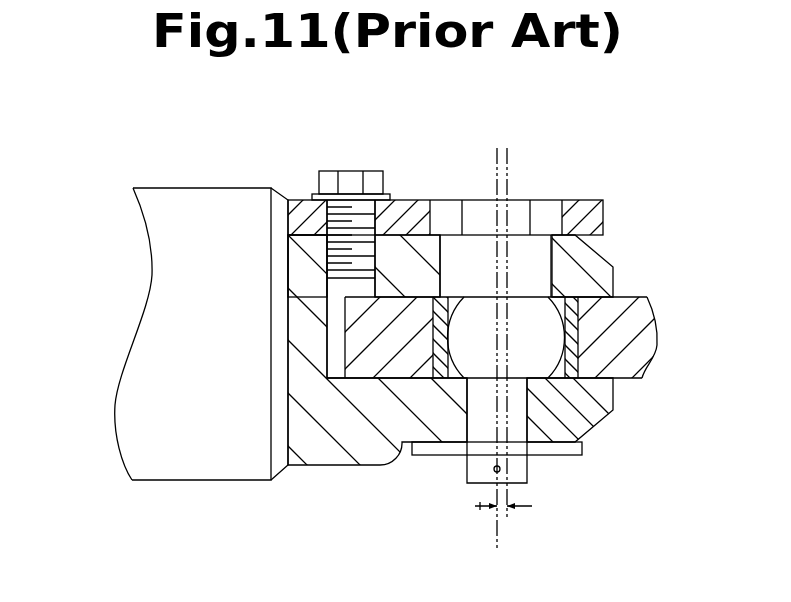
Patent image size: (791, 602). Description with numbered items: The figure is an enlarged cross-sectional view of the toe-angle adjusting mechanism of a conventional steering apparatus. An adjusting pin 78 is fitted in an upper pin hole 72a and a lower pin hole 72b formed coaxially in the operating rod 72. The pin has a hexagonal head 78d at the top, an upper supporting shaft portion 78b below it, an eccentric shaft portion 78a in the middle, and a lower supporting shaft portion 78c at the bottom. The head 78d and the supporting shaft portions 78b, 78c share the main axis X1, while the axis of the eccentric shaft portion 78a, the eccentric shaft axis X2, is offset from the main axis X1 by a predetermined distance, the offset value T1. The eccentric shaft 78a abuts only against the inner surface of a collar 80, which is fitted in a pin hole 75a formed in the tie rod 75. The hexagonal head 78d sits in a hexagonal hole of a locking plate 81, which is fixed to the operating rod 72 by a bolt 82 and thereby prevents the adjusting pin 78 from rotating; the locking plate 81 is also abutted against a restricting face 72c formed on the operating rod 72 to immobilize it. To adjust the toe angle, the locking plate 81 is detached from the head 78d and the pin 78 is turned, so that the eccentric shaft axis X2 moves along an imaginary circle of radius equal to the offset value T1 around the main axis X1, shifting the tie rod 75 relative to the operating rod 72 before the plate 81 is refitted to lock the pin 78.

The operating rod 72 is at (208, 186).
The upper pin hole 72a is at (549, 258).
The lower pin hole 72b is at (518, 427).
The restricting face 72c is at (293, 200).
The tie rod 75 is at (648, 332).
The pin hole 75a is at (578, 381).
The adjusting pin 78 is at (545, 310).
The eccentric shaft portion 78a is at (555, 322).
The upper supporting shaft portion 78b is at (457, 247).
The lower supporting shaft portion 78c is at (472, 420).
The hexagonal head 78d is at (480, 207).
The collar 80 is at (580, 357).
The locking plate 81 is at (593, 207).
The bolt 82 is at (346, 171).
The offset value T1 is at (478, 518).
The main axis X1 is at (494, 364).
The eccentric shaft axis X2 is at (508, 522).